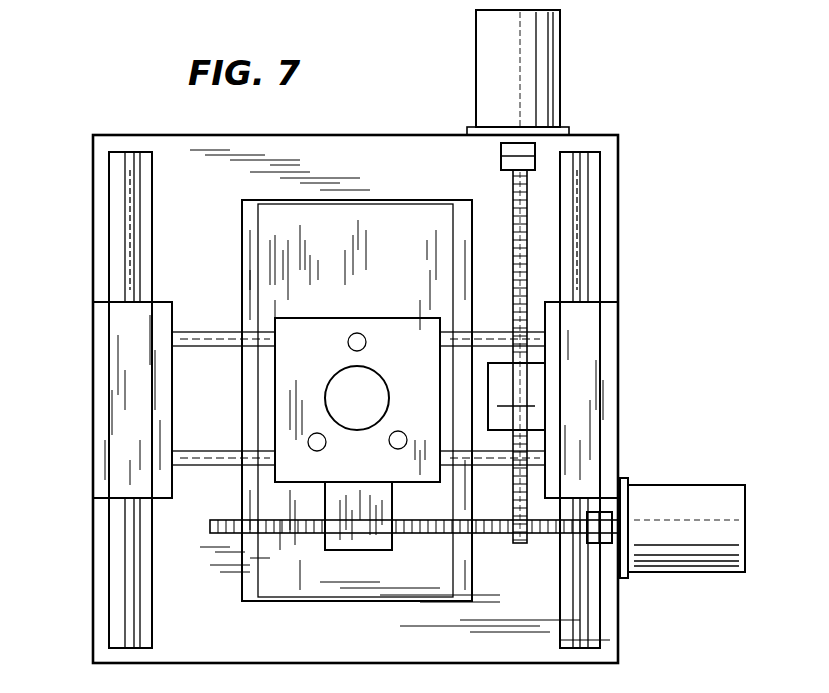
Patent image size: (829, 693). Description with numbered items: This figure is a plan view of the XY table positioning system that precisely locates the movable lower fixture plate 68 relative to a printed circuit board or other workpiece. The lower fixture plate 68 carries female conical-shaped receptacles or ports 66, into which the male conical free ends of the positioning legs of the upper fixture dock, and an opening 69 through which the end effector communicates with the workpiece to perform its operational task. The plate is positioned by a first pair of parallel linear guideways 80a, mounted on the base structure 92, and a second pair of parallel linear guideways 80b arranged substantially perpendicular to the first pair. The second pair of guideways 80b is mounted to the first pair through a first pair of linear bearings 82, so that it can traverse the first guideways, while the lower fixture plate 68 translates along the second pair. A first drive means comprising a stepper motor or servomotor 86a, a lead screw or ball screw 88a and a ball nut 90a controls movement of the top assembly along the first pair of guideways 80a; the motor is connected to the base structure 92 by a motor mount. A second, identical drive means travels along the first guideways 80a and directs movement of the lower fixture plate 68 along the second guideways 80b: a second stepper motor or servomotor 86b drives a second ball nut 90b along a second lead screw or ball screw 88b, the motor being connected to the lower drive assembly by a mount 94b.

The female conical-shaped receptacles or ports 66 is at (312, 434).
The movable lower fixture plate 68 is at (357, 365).
The opening 69 is at (368, 382).
The first pair of parallel linear guideways 80a is at (133, 225).
The second pair of parallel linear guideways 80b is at (193, 452).
The first pair of linear bearings 82 is at (94, 350).
The stepper motor or servomotor 86a is at (485, 64).
The second stepper motor or servomotor 86b is at (696, 486).
The lead screw or ball screw 88a is at (512, 193).
The second lead screw or ball screw 88b is at (486, 534).
The ball nut 90a is at (516, 396).
The second ball nut 90b is at (372, 552).
The base structure 92 is at (608, 657).
The mount 94b is at (623, 482).